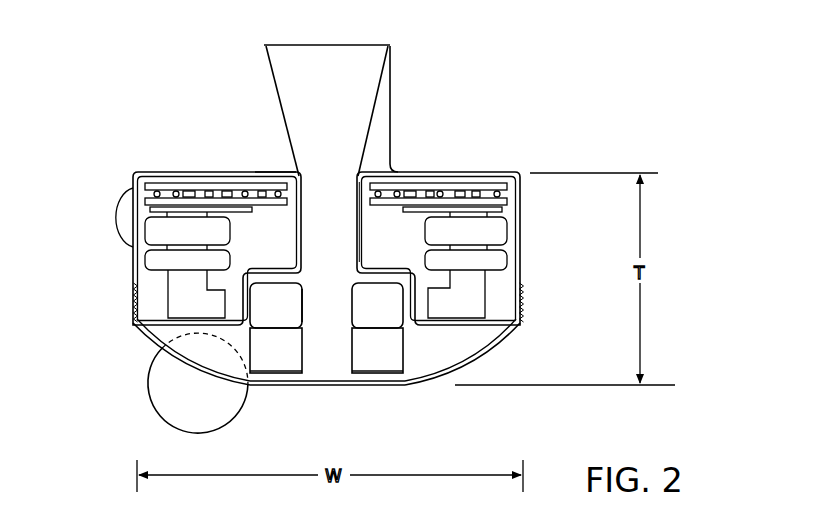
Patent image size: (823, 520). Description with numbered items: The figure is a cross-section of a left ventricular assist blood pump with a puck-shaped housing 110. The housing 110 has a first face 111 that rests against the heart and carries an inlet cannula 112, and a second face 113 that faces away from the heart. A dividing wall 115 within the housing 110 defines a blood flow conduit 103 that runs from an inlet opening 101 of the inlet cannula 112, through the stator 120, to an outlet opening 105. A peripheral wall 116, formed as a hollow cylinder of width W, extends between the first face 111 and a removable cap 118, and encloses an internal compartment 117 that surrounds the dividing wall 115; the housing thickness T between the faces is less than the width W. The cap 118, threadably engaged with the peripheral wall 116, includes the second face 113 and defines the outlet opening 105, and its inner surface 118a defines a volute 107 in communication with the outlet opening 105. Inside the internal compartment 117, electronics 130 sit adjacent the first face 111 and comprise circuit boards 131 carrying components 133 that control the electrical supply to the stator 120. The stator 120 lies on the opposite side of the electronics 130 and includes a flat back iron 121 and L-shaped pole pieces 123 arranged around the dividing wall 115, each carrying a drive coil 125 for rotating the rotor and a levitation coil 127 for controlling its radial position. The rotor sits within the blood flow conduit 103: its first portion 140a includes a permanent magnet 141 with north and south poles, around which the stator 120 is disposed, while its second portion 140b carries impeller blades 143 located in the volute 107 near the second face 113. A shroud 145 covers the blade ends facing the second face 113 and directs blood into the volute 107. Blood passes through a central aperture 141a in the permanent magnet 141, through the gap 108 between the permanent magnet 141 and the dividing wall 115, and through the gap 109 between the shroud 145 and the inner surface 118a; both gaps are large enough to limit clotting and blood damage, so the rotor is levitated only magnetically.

The inlet opening 101 is at (353, 45).
The blood flow conduit 103 is at (346, 167).
The outlet opening 105 is at (155, 402).
The volute 107 is at (473, 347).
The gap 108 is at (292, 280).
The gap 109 is at (267, 375).
The housing 110 is at (137, 260).
The first face 111 is at (430, 173).
The inlet cannula 112 is at (392, 108).
The second face 113 is at (430, 383).
The dividing wall 115 is at (360, 258).
The peripheral wall 116 is at (522, 203).
The internal compartment 117 is at (280, 232).
The removable cap 118 is at (150, 338).
The inner surface 118a is at (437, 368).
The stator 120 is at (505, 288).
The back iron 121 is at (150, 210).
The pole piece 123 is at (177, 295).
The drive coil 125 is at (507, 230).
The levitation coil 127 is at (507, 262).
The electronics 130 is at (270, 170).
The circuit board 131 is at (380, 190).
The component 133 is at (182, 197).
The first portion 140a is at (400, 303).
The second portion 140b is at (520, 327).
The permanent magnet 141 is at (250, 310).
The central aperture 141a is at (348, 318).
The impeller blades 143 is at (377, 358).
The shroud 145 is at (283, 375).